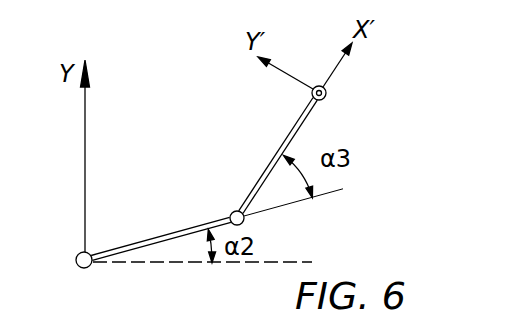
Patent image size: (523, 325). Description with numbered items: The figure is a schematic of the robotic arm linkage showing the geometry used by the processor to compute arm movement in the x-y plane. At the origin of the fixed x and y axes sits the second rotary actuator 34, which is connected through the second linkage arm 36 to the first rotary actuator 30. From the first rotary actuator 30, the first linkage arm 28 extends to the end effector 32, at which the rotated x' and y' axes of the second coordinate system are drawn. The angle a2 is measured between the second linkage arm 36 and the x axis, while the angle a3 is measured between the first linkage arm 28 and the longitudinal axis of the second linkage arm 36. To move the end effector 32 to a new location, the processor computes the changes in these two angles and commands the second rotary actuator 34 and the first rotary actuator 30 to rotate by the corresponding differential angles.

The first linkage arm 28 is at (312, 121).
The first rotary actuator 30 is at (234, 211).
The end effector 32 is at (311, 93).
The second rotary actuator 34 is at (91, 253).
The second linkage arm 36 is at (174, 231).